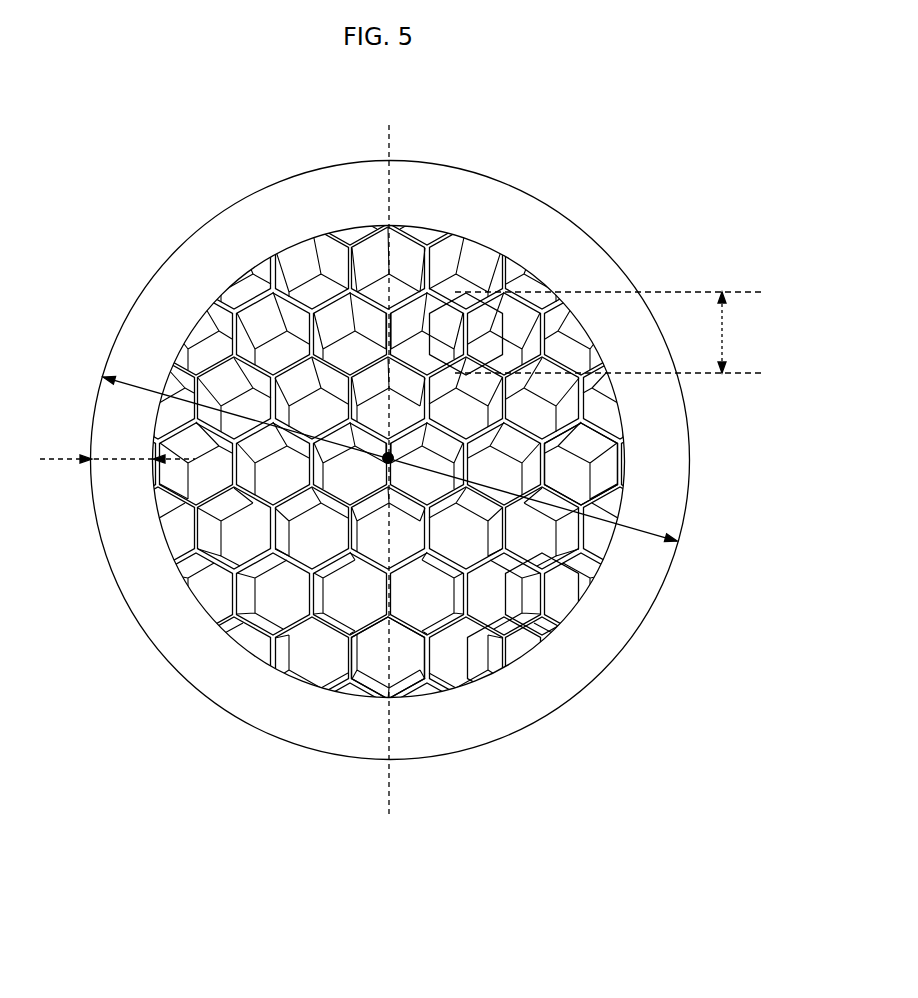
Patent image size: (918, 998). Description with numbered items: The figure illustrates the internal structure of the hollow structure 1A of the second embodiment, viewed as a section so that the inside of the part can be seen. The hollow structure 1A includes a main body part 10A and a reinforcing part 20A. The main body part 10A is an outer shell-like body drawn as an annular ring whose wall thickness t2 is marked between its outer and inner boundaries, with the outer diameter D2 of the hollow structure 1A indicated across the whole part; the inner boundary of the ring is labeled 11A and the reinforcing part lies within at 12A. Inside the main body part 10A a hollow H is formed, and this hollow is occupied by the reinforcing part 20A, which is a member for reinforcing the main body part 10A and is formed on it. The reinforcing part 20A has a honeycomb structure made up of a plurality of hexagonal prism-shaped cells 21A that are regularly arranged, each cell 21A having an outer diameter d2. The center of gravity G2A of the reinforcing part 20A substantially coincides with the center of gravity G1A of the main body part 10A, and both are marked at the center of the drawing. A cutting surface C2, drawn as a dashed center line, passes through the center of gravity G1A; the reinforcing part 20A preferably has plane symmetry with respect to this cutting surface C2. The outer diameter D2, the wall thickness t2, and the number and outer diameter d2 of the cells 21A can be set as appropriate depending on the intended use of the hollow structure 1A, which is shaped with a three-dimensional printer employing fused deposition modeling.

The hollow structure 1A is at (430, 454).
The main body part 10A is at (598, 245).
The honeycomb grid body 11A is at (684, 541).
The partition wall 12A is at (568, 568).
The reinforcing part 20A is at (562, 440).
The cell 21A is at (456, 292).
The hollow H is at (485, 650).
The outer diameter of the hollow structure D2 is at (416, 451).
The outer diameter of the cells d2 is at (610, 332).
The wall thickness of the main body part t2 is at (117, 450).
The cutting surface C2 is at (392, 800).
The center of gravity of the main body part G1A is at (388, 458).
The center of gravity of the reinforcing part G2A is at (331, 287).